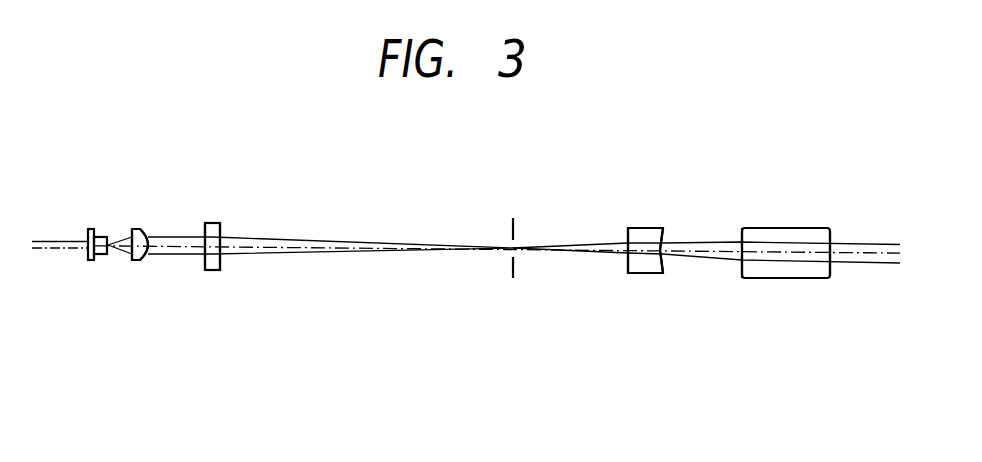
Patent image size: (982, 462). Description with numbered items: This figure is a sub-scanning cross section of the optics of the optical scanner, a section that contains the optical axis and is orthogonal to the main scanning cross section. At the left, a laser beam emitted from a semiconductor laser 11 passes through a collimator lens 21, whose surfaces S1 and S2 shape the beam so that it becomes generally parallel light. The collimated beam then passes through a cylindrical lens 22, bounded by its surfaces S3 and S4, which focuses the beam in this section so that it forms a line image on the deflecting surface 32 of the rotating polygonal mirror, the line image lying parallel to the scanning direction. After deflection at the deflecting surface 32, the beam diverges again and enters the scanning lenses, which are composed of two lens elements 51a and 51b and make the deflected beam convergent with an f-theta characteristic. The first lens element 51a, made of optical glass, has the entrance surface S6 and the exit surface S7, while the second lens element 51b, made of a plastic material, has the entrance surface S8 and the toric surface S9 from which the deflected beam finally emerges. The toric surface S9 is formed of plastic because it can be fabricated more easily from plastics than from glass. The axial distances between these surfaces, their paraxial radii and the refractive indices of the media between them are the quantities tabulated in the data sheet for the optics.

The semiconductor laser 11 is at (92, 259).
The collimator lens 21 is at (138, 261).
The cylindrical lens 22 is at (213, 270).
The deflecting surface 32 is at (516, 285).
The lens element 51a is at (646, 272).
The lens element 51b is at (770, 232).
The lens surface S1 is at (127, 240).
The lens surface S2 is at (152, 241).
The lens surface S3 is at (203, 254).
The lens surface S4 is at (222, 248).
The lens surface S6 is at (628, 241).
The lens surface S7 is at (661, 252).
The lens surface S8 is at (740, 248).
The toric surface S9 is at (838, 242).